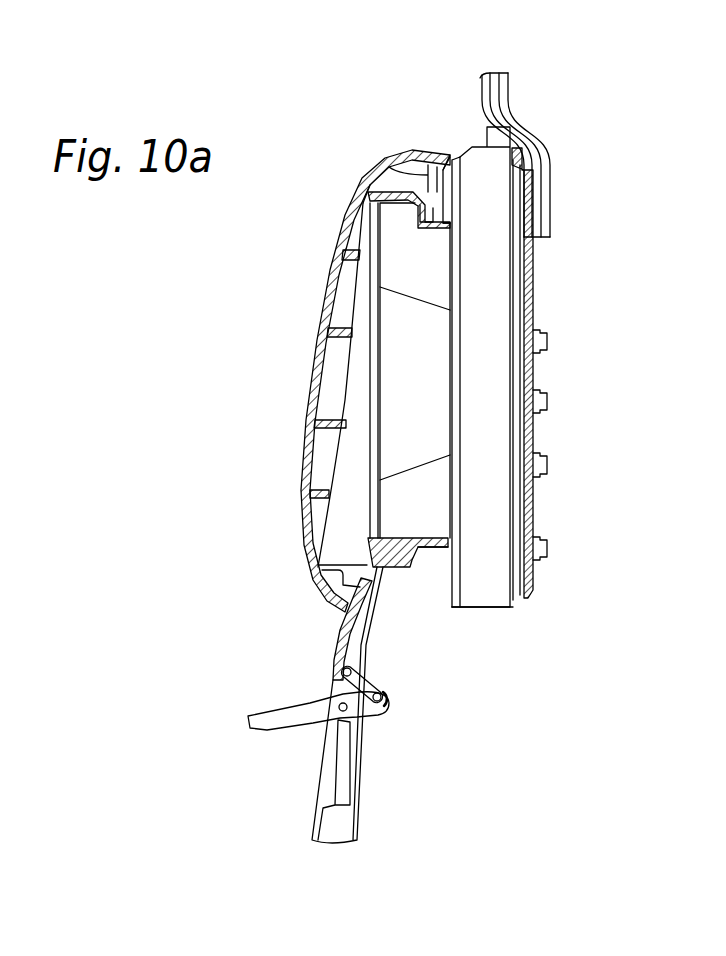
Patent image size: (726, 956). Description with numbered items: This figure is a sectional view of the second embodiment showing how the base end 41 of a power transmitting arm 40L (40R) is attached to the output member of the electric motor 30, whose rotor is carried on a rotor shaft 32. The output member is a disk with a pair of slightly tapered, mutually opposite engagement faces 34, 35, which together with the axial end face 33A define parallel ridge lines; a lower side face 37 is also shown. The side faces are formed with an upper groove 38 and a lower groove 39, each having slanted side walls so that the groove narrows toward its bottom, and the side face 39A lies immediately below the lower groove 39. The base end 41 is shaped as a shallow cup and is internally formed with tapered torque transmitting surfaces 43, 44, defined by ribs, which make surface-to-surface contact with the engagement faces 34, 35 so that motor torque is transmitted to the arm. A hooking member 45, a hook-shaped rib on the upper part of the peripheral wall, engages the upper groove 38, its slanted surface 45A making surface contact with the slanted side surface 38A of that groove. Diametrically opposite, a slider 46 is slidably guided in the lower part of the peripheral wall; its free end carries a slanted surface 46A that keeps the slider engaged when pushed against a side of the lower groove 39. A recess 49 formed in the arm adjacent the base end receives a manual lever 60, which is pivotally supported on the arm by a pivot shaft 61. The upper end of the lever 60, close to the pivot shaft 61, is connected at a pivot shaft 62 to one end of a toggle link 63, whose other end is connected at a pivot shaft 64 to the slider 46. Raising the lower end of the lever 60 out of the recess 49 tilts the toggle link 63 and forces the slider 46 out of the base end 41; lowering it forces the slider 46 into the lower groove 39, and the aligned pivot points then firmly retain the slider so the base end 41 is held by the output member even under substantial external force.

The electric motor 30 is at (500, 437).
The rotor shaft 32 is at (457, 440).
The axial end face of the output member 33A is at (377, 450).
The side face (engagement face) 34 is at (440, 365).
The side face (engagement face) 35 is at (517, 370).
The lower side face 37 is at (397, 567).
The upper groove 38 is at (444, 158).
The slanted side surface of the groove 38A is at (423, 195).
The lower groove 39 is at (467, 601).
The side face below the groove 39A is at (432, 553).
The power transmitting arm (left) 40L is at (398, 705).
The power transmitting arm (right) 40R is at (325, 705).
The base end 41 is at (333, 273).
The tapered torque transmitting surface 43 is at (362, 420).
The tapered torque transmitting surface 44 is at (268, 385).
The hooking member 45 is at (388, 176).
The slanted surface of the hooking member 45A is at (413, 212).
The slider (latch member) 46 is at (350, 635).
The slanted surface of the slider 46A is at (313, 587).
The recess 49 is at (340, 784).
The manual lever 60 is at (267, 730).
The pivot shaft 61 is at (333, 703).
The pivot shaft 62 is at (388, 708).
The toggle link 63 is at (372, 685).
The pivot shaft 64 is at (357, 668).